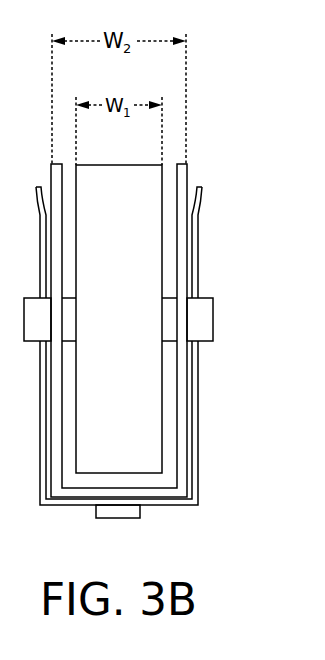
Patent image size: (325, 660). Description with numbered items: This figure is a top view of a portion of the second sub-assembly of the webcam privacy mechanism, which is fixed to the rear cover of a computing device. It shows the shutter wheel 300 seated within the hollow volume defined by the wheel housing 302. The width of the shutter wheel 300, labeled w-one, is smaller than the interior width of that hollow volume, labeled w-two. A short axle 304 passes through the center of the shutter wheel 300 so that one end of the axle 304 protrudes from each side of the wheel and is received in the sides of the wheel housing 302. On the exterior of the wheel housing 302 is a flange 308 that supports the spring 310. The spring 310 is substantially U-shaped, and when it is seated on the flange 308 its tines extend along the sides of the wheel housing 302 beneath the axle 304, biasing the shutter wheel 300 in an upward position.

The shutter wheel 300 is at (157, 398).
The wheel housing 302 is at (192, 493).
The axle 304 is at (213, 318).
The flange 308 is at (118, 520).
The spring 310 is at (198, 252).